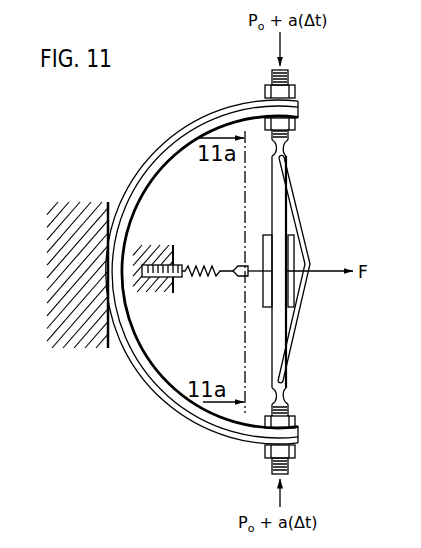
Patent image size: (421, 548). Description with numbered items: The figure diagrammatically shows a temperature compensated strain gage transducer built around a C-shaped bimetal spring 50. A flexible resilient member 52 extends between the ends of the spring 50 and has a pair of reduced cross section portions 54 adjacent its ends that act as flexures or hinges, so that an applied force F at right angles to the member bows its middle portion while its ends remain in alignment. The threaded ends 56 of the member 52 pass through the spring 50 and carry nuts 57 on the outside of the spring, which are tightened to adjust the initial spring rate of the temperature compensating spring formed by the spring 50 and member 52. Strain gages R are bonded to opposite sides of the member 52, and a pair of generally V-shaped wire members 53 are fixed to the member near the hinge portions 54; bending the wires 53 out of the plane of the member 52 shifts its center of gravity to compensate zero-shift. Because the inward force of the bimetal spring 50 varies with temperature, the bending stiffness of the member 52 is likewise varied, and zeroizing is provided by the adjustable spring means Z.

The C-shaped bimetal spring 50 is at (176, 128).
The flexible resilient member 52 is at (264, 181).
The wire members 53 is at (297, 213).
The reduced cross section portions 54 is at (290, 146).
The threaded ends 56 is at (290, 76).
The nut 57 is at (296, 91).
The strain gages R is at (264, 246).
The adjustable spring means Z is at (194, 288).